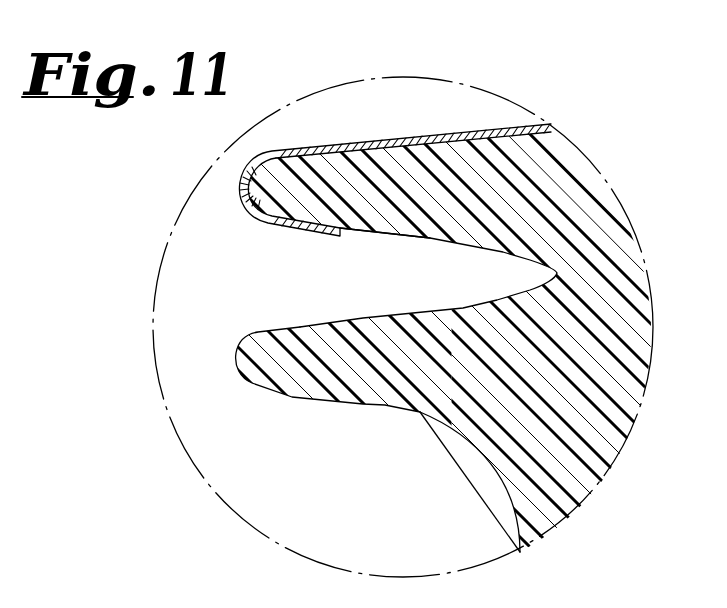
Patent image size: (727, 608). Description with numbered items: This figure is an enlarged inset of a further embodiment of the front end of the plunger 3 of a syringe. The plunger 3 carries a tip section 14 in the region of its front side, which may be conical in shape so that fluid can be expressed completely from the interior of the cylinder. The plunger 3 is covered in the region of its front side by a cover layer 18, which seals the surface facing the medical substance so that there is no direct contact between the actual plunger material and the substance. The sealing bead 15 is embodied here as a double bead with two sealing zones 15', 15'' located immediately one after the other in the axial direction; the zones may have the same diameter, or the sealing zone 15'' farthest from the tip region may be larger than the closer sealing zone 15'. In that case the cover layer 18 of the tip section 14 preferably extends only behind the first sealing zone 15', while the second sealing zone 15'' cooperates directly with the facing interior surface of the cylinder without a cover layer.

The plunger 3 is at (577, 477).
The tip section 14 is at (551, 172).
The sealing bead 15 is at (318, 277).
The first sealing zone 15' is at (272, 181).
The second sealing zone 15'' is at (254, 370).
The cover layer 18 is at (406, 135).